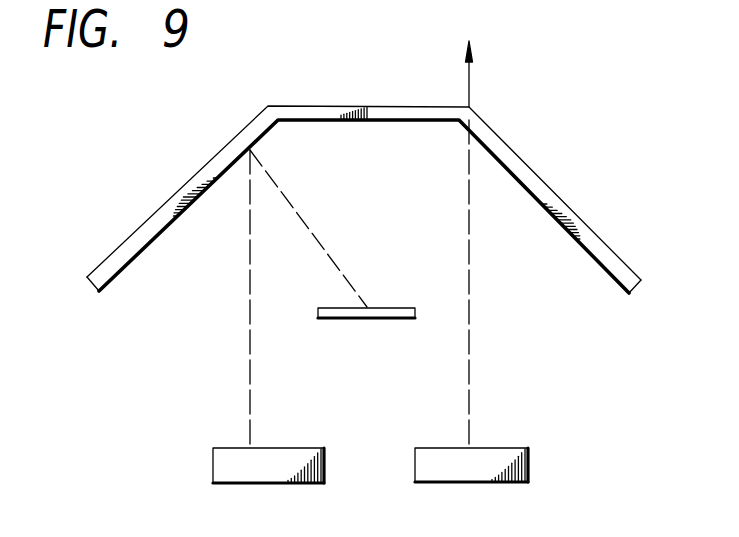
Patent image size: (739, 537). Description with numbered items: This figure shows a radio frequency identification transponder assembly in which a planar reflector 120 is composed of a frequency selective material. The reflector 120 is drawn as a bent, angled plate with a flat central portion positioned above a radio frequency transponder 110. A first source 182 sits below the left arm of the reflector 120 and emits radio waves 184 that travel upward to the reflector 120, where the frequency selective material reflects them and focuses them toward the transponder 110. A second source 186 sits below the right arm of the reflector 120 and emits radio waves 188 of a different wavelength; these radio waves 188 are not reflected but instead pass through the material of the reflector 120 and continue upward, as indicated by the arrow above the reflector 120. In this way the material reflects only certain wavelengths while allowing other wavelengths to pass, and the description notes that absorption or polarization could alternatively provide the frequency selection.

The reflector 120 is at (523, 163).
The radio frequency transponder 110 is at (377, 320).
The first source 182 is at (213, 468).
The radio waves 184 is at (248, 332).
The second source 186 is at (528, 467).
The radio waves 188 is at (472, 258).